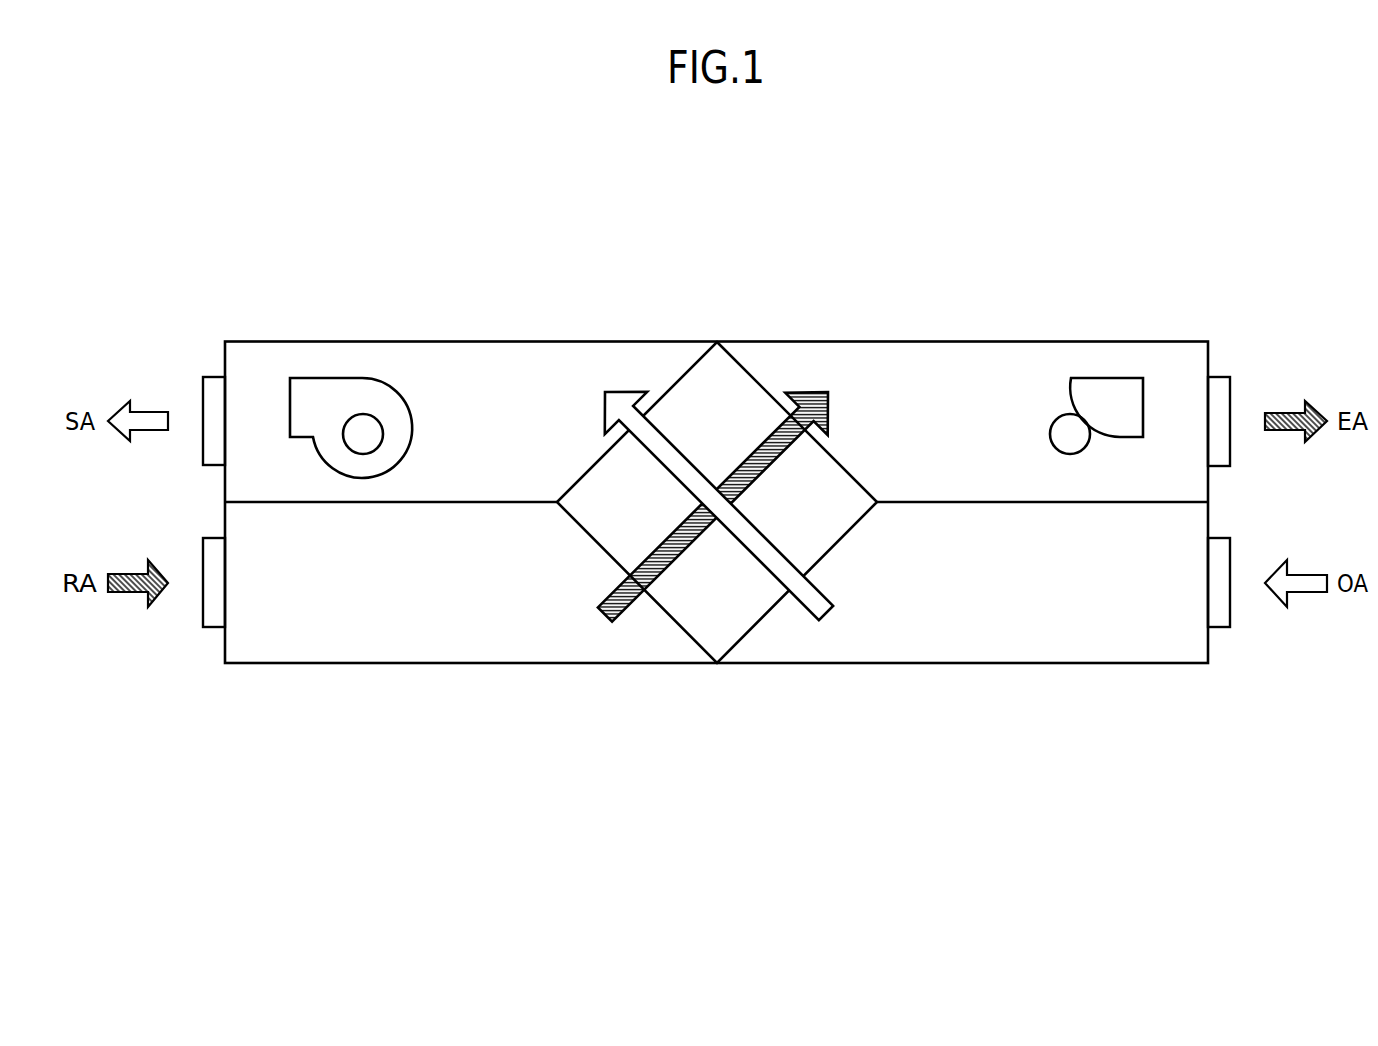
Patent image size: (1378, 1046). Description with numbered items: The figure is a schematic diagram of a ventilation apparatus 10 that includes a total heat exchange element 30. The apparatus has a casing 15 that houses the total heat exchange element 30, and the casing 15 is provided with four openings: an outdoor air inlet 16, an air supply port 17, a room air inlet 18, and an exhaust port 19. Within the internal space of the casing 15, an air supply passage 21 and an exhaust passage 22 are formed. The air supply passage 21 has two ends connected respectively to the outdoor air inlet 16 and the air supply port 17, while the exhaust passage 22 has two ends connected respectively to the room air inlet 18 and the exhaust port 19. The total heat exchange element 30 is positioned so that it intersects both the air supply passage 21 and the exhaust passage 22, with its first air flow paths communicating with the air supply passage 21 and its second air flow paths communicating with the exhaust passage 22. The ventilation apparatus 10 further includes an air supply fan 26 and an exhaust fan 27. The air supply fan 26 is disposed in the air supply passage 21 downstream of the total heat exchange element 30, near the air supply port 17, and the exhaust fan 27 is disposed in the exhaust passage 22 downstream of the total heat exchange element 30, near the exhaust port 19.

The ventilation apparatus 10 is at (722, 434).
The casing 15 is at (825, 341).
The outdoor air inlet 16 is at (1230, 608).
The air supply port 17 is at (203, 392).
The room air inlet 18 is at (203, 608).
The exhaust port 19 is at (1230, 392).
The air supply passage 21 is at (490, 360).
The exhaust passage 22 is at (960, 360).
The air supply fan 26 is at (408, 432).
The exhaust fan 27 is at (1025, 432).
The total heat exchange element 30 is at (847, 535).